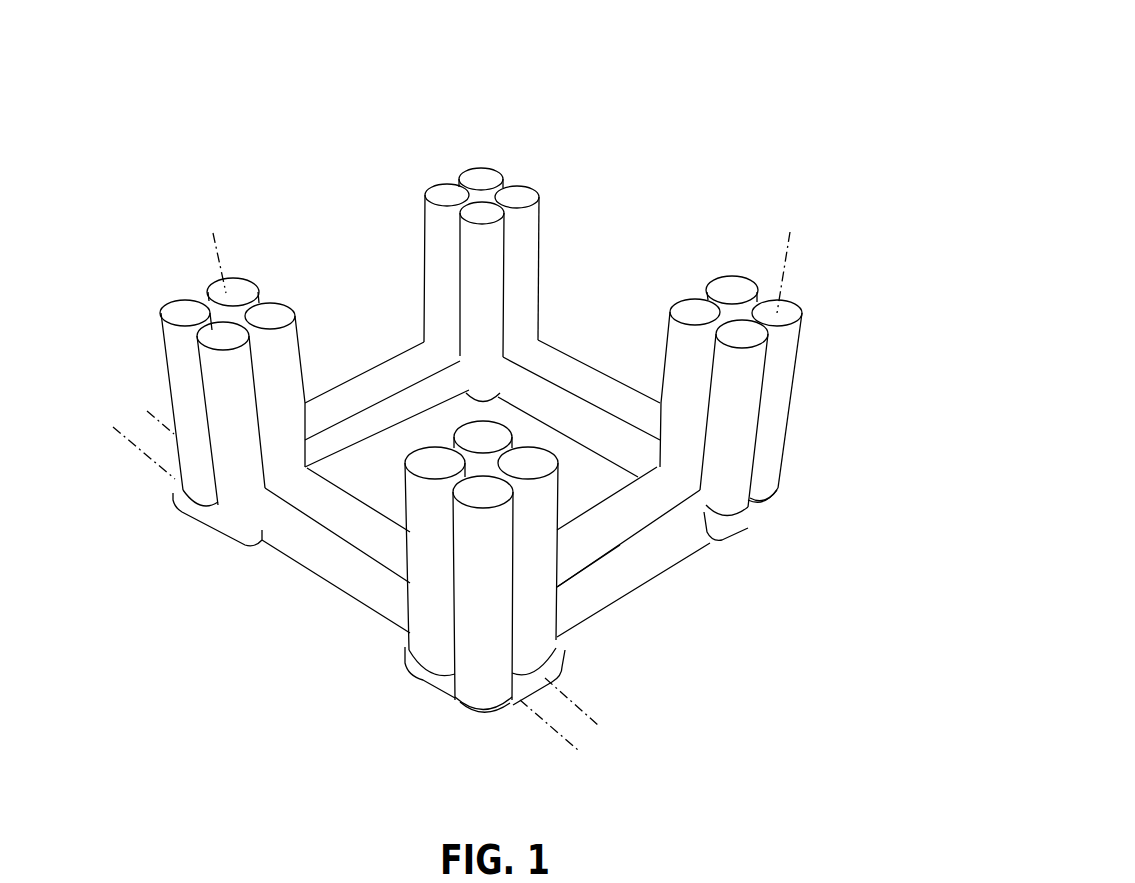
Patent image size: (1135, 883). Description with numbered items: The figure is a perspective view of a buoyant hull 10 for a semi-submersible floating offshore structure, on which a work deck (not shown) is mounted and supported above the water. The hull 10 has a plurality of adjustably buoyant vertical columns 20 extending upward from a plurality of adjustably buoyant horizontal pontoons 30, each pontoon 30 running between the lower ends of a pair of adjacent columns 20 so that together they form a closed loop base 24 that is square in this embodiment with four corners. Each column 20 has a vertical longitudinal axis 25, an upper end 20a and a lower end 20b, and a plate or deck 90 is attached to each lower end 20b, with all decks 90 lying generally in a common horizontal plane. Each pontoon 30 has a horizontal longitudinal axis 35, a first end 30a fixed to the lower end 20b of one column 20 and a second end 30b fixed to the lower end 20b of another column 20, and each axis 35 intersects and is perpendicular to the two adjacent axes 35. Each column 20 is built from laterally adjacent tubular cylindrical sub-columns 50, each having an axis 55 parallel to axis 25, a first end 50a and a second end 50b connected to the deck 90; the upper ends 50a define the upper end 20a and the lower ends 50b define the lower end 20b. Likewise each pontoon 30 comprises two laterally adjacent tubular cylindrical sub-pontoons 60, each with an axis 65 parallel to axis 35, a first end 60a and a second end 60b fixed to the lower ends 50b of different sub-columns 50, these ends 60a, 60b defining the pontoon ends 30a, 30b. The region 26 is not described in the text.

The hull 10 is at (777, 78).
The column 20 is at (125, 300).
The upper end of column 20a is at (530, 193).
The lower end of column 20b is at (784, 495).
The base 24 is at (375, 344).
The longitudinal axis of column 25 is at (213, 243).
The lower surface of frame 26 is at (376, 481).
The pontoon 30 is at (660, 598).
The first end of pontoon 30a is at (403, 614).
The second end of pontoon 30b is at (248, 517).
The longitudinal axis of pontoon 35 is at (585, 722).
The sub-column 50 is at (780, 403).
The first end of sub-column 50a is at (822, 285).
The second end of sub-column 50b is at (847, 497).
The longitudinal axis of sub-column 55 is at (787, 243).
The sub-pontoon 60 is at (666, 546).
The first end of sub-pontoon 60a is at (720, 516).
The second end of sub-pontoon 60b is at (558, 645).
The longitudinal axis of sub-pontoon 65 is at (548, 728).
The deck plate 90 is at (447, 683).